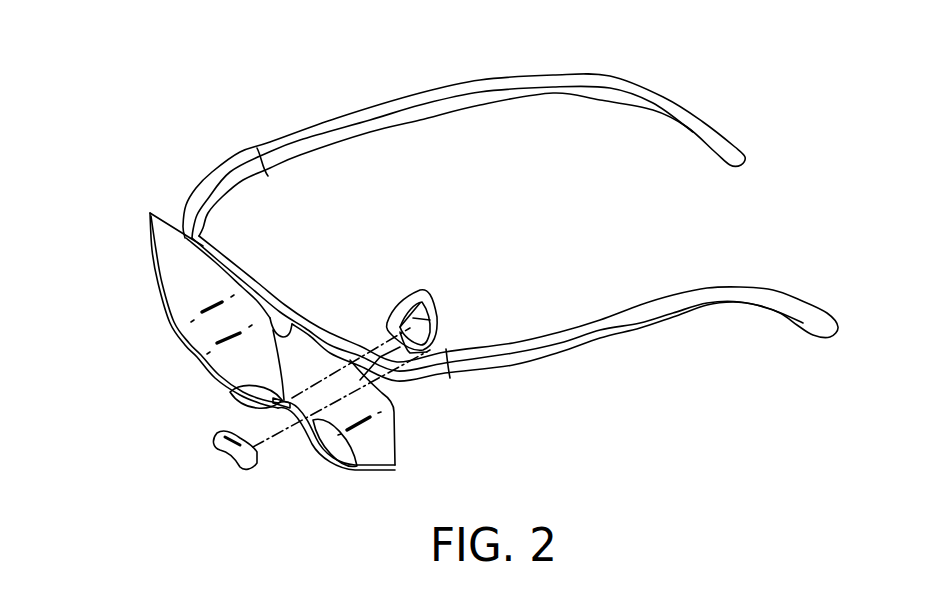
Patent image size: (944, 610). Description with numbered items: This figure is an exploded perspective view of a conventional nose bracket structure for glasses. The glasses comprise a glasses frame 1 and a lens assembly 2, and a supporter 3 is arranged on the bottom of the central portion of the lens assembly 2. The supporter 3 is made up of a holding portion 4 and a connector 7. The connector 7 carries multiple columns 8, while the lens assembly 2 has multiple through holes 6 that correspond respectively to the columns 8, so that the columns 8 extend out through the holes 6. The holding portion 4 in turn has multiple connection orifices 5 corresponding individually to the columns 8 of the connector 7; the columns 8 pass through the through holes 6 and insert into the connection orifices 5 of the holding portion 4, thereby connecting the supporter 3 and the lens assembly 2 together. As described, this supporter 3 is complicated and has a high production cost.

The glasses frame 1 is at (213, 128).
The lens assembly 2 is at (172, 285).
The supporter 3 is at (286, 475).
The holding portion 4 is at (438, 313).
The connection orifices 5 is at (393, 330).
The through holes 6 is at (232, 397).
The connector 7 is at (236, 463).
The columns 8 is at (233, 440).